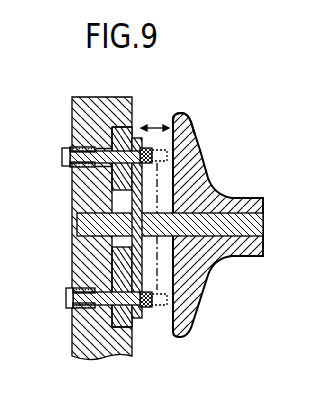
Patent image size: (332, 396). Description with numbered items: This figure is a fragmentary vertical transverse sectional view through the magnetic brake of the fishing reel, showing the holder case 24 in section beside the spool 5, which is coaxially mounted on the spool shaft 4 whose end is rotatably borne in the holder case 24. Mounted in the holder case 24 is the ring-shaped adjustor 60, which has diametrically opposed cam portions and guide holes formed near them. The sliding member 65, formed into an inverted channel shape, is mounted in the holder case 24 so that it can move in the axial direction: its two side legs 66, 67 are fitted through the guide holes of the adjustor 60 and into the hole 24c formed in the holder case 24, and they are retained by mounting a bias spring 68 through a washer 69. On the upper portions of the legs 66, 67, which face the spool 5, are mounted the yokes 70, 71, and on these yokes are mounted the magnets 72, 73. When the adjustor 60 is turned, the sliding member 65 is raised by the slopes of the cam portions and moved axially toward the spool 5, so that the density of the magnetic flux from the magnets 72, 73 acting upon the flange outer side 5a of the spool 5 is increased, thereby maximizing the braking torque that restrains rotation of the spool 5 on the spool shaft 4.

The holder case 24 is at (76, 113).
The hole 24c is at (86, 168).
The ring-shaped adjustor 60 is at (137, 137).
The flange outer side 5a is at (172, 116).
The spool 5 is at (244, 197).
The sliding member 65 is at (176, 170).
The yoke 70 is at (152, 149).
The yoke 71 is at (150, 309).
The magnet 72 is at (143, 160).
The magnet 73 is at (158, 308).
The leg 66 is at (81, 148).
The leg 67 is at (100, 298).
The bias spring 68 is at (70, 152).
The washer 69 is at (62, 163).
The spool shaft 4 is at (77, 227).